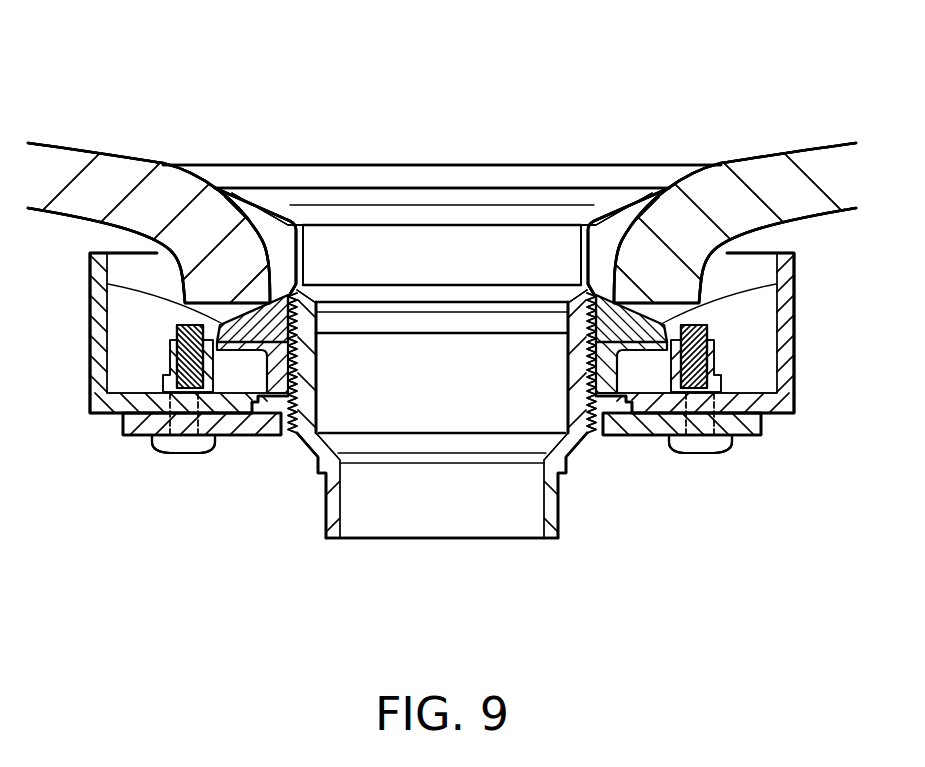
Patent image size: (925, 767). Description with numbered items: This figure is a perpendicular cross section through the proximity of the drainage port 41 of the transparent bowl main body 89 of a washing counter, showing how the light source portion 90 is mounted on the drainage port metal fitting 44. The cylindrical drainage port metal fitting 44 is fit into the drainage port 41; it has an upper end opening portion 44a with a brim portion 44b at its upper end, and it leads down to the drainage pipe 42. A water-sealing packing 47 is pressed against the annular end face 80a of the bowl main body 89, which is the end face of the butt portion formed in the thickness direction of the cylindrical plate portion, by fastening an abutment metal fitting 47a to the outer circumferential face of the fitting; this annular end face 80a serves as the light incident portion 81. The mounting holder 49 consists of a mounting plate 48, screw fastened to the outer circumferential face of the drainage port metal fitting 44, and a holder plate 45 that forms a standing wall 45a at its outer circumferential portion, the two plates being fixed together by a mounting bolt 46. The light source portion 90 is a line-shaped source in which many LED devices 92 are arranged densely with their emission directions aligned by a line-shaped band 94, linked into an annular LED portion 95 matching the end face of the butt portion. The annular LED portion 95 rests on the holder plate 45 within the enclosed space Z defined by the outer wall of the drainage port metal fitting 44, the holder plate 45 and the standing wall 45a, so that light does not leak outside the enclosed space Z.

The bowl main body 89 is at (72, 170).
The light incident portion 81 is at (208, 287).
The annular end face 80a is at (243, 302).
The drainage port metal fitting 44 is at (310, 408).
The upper end opening portion 44a is at (509, 179).
The brim portion 44b is at (247, 203).
The drainage port 41 is at (619, 231).
The mounting plate 48 is at (288, 437).
The drainage pipe 42 is at (340, 540).
The water-sealing packing 47 is at (217, 322).
The abutment metal fitting 47a is at (268, 368).
The enclosed space Z is at (132, 319).
The holder plate 45 is at (90, 414).
The standing wall 45a is at (100, 318).
The mounting holder 49 is at (78, 400).
The mounting bolt 46 is at (187, 457).
The LED devices 92 is at (177, 327).
The line-shaped band 94 is at (172, 352).
The annular LED portion 95 is at (168, 490).
The light source portion 90 is at (106, 547).